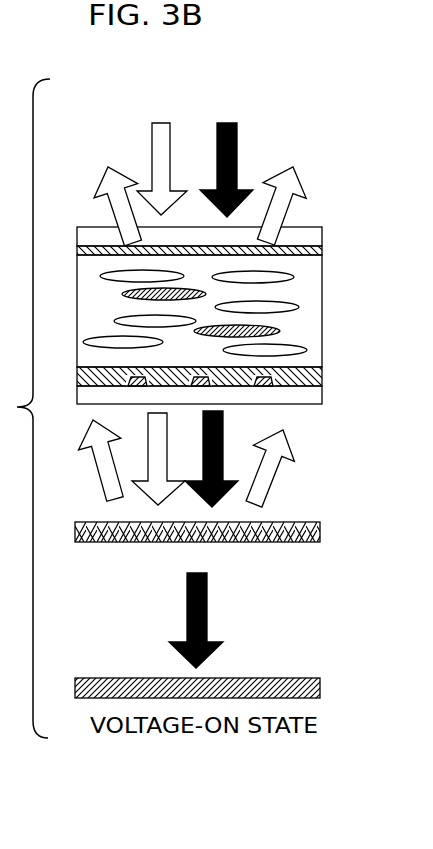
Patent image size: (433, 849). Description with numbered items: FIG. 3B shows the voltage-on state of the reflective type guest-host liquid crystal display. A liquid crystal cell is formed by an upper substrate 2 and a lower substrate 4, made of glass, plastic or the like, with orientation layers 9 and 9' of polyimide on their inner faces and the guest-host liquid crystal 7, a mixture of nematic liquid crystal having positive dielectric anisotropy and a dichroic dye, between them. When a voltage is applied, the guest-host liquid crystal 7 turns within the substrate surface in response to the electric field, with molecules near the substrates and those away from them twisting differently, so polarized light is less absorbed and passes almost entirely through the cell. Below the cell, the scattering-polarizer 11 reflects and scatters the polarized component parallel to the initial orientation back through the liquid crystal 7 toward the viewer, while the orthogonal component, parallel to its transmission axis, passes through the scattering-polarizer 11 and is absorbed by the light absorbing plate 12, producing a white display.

The substrate 2 is at (322, 238).
The orientation layer 9 is at (216, 255).
The guest-host liquid crystal 7 is at (322, 307).
The orientation layer 9' is at (218, 377).
The substrate 4 is at (322, 398).
The scattering-polarizer 11 is at (320, 532).
The light absorbing plate 12 is at (320, 690).